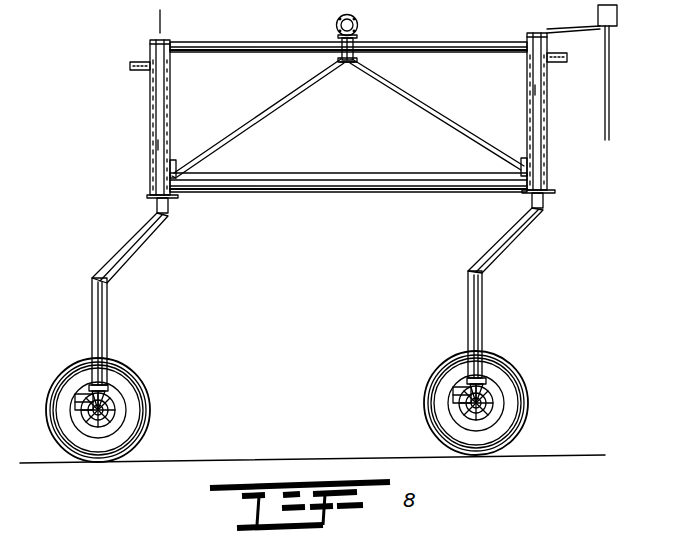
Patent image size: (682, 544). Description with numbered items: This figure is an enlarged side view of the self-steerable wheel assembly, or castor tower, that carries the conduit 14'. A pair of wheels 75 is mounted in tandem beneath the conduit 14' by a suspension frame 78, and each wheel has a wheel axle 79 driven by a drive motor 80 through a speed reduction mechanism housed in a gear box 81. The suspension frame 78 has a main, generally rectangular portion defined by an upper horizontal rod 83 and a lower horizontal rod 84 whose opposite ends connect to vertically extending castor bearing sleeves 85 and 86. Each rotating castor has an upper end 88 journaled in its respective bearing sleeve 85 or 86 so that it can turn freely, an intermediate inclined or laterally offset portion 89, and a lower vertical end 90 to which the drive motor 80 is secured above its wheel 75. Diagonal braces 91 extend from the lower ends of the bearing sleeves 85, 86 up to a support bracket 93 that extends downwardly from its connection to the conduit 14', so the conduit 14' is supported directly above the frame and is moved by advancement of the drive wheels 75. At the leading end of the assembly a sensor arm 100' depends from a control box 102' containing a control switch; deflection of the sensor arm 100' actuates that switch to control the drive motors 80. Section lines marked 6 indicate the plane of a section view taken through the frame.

The section line 6- 6 is at (160, 22).
The conduit 14' is at (310, 36).
The wheels 75 is at (150, 403).
The suspension frame 78 is at (147, 110).
The wheel axle 79 is at (105, 413).
The drive motor 80 is at (80, 394).
The gear box 81 is at (88, 413).
The upper horizontal rod 83 is at (228, 53).
The lower horizontal rod 84 is at (250, 194).
The castor bearing sleeve 85 is at (160, 172).
The castor bearing sleeve 86 is at (548, 148).
The upper end of castor 88 is at (152, 146).
The intermediate inclined portion 89 is at (134, 258).
The lower vertical end 90 is at (108, 327).
The diagonal braces 91 is at (258, 117).
The support bracket 93 is at (358, 57).
The sensor arm 100' is at (581, 83).
The control box 102' is at (565, 16).